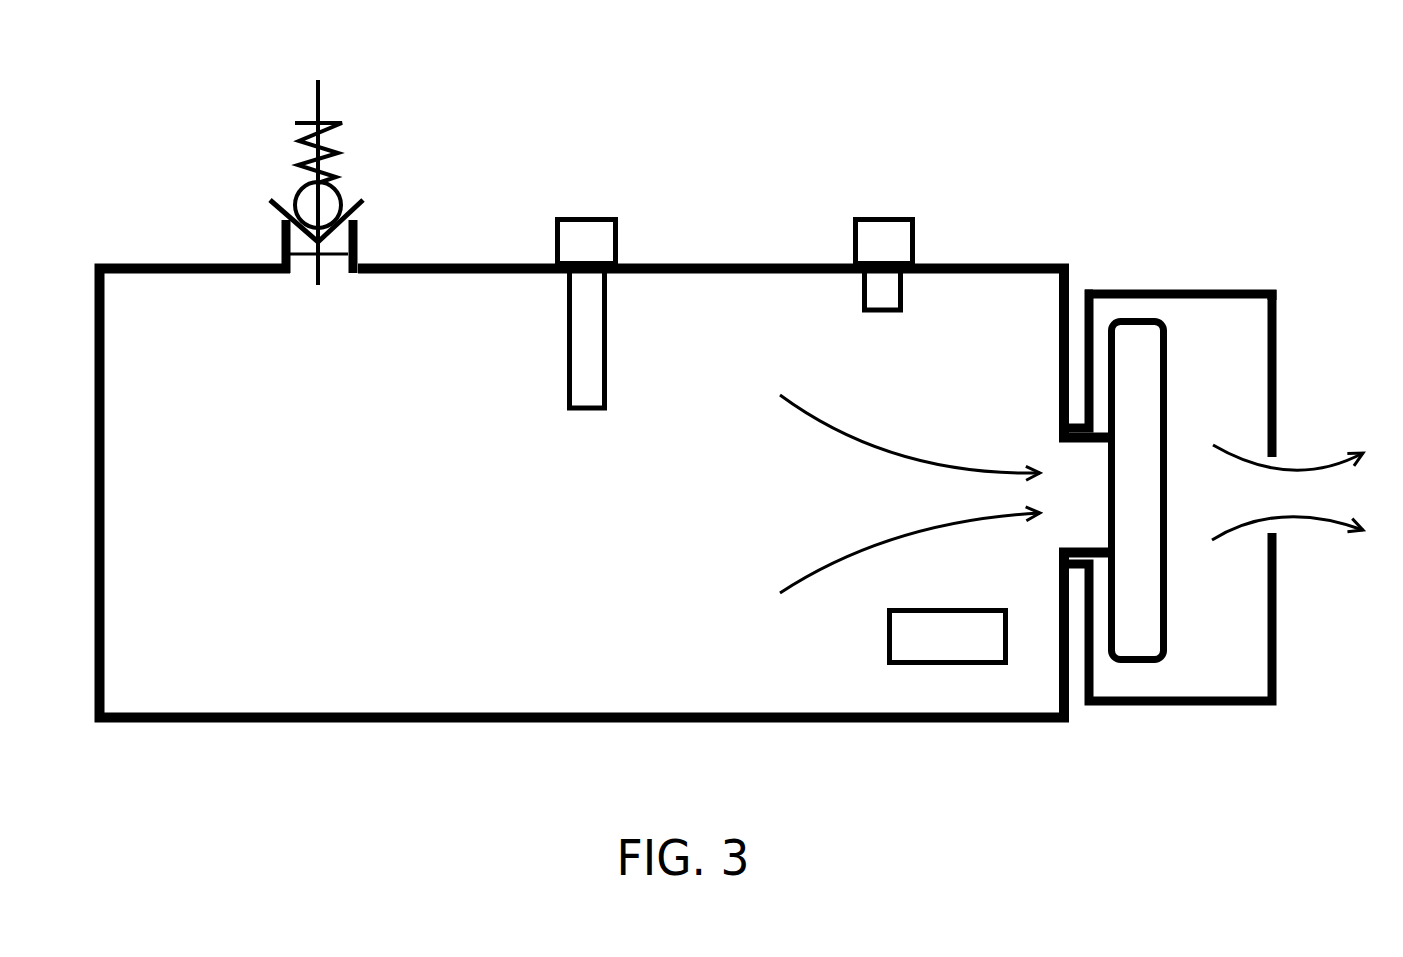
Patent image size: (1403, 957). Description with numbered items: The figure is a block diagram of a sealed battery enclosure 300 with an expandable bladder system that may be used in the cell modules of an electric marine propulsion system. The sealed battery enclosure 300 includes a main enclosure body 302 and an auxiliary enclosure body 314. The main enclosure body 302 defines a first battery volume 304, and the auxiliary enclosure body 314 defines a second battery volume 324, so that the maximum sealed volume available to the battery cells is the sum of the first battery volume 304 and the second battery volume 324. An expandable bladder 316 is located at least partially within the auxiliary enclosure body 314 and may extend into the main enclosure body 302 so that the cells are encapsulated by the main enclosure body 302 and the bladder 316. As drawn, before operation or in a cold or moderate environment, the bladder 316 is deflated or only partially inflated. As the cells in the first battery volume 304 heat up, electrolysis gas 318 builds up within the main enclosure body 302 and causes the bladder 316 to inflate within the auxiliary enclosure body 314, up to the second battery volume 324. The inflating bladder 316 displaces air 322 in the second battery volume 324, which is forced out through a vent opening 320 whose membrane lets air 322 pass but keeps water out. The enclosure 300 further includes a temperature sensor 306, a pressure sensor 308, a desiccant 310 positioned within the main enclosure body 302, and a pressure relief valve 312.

The sealed battery enclosure 300 is at (143, 125).
The main enclosure body 302 is at (725, 265).
The first battery volume 304 is at (1153, 443).
The temperature sensor 306 is at (620, 242).
The pressure sensor 308 is at (917, 235).
The desiccant 310 is at (885, 640).
The pressure relief valve 312 is at (300, 187).
The auxiliary enclosure body 314 is at (1225, 290).
The expandable bladder 316 is at (1167, 575).
The electrolysis gas 318 is at (890, 450).
The vent opening 320 is at (1297, 450).
The air 322 is at (1287, 517).
The second battery volume 324 is at (1230, 373).